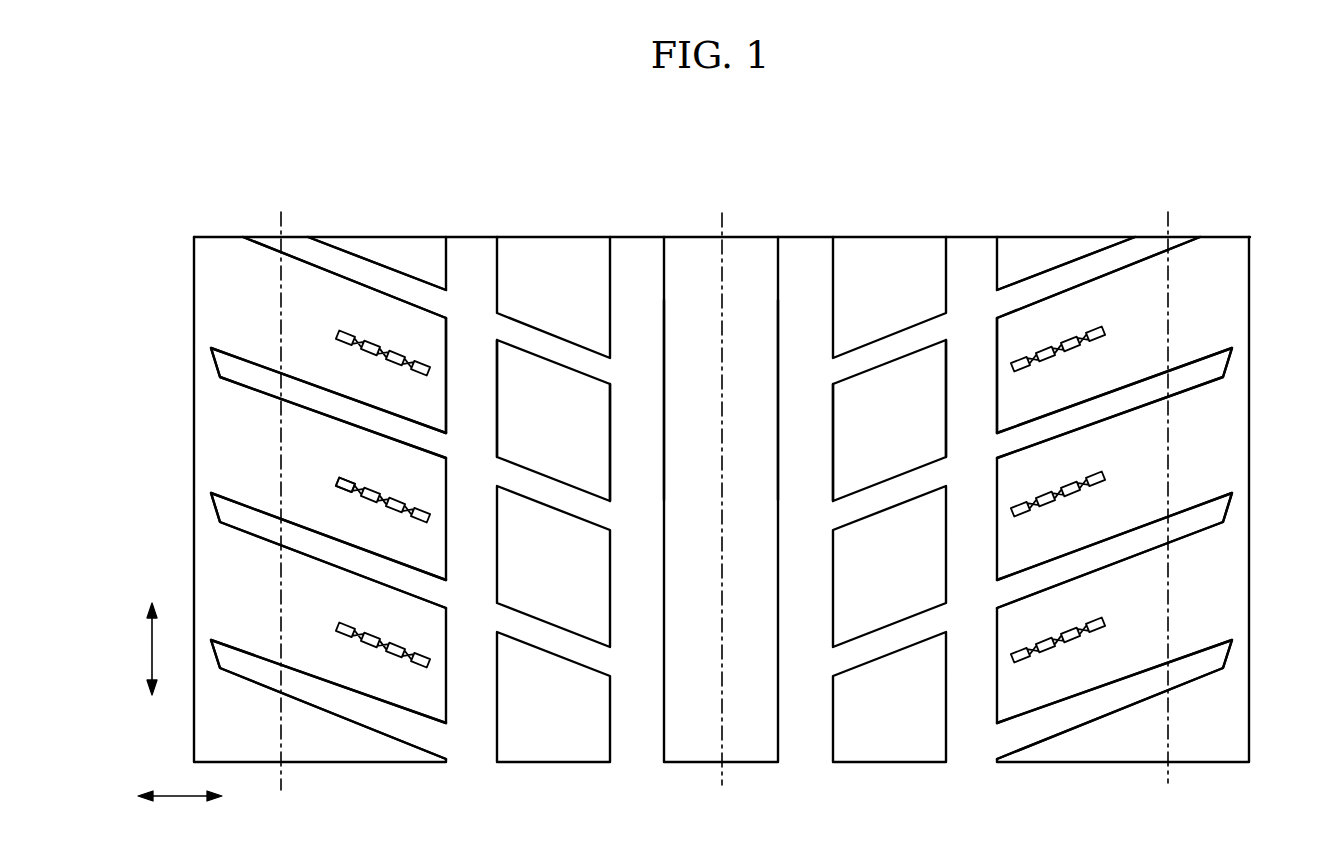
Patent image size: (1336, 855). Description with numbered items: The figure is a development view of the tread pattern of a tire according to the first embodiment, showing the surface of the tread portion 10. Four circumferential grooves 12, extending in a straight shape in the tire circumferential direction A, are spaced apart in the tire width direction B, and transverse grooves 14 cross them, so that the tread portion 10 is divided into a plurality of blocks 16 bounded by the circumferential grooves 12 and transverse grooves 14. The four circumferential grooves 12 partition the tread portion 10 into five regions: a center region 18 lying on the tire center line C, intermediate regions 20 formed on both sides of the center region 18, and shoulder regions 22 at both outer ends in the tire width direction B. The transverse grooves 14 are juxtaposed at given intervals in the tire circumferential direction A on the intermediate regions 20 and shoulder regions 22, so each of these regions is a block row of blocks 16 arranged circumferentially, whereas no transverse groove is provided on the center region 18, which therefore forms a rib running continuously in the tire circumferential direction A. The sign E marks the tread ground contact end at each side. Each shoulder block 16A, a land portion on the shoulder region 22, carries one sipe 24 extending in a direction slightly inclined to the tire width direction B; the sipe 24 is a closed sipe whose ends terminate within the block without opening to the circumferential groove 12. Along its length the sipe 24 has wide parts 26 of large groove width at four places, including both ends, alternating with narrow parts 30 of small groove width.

The tread portion 10 is at (735, 160).
The circumferential groove 12 is at (474, 258).
The transverse groove 14 is at (1208, 367).
The block 16 is at (599, 452).
The shoulder block 16A is at (1060, 318).
The center region 18 is at (695, 748).
The intermediate region 20 is at (558, 748).
The shoulder region 22 is at (385, 764).
The sipe 24 is at (372, 648).
The wide part 26 is at (340, 487).
The narrow part 30 is at (358, 486).
The tire circumferential direction A is at (144, 649).
The tire width direction B is at (180, 784).
The tire center line C is at (723, 773).
The tread ground contact end E is at (277, 777).